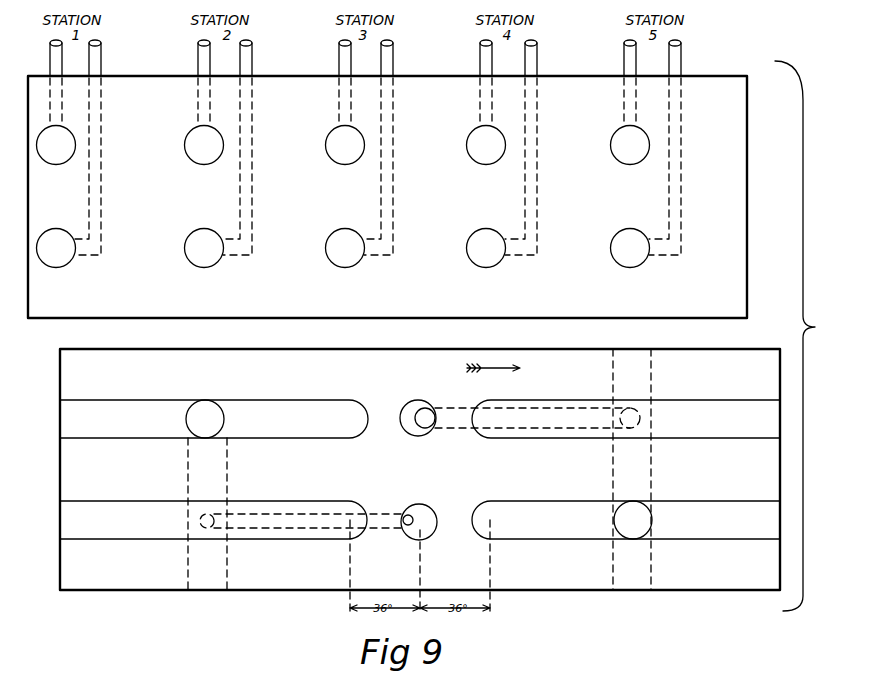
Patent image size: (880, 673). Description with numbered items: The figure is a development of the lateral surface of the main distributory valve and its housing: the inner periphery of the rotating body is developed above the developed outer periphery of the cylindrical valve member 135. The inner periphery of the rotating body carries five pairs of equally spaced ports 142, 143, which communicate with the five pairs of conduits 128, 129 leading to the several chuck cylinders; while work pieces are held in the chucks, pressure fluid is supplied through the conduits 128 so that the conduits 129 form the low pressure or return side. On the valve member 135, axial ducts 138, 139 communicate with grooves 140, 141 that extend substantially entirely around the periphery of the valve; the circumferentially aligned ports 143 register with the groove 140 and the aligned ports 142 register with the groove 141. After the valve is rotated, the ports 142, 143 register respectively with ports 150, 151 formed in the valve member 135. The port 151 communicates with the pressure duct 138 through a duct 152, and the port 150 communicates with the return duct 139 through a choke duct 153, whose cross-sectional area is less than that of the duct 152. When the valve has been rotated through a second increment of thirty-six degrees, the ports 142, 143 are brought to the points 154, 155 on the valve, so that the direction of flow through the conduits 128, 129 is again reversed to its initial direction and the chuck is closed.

The conduit 129 is at (326, 83).
The conduit 128 is at (397, 147).
The port 143 is at (343, 163).
The port 142 is at (343, 266).
The groove 141 is at (399, 419).
The cylindrical valve member 135 is at (401, 515).
The groove 140 is at (402, 469).
The duct 139 is at (189, 531).
The point 155 is at (347, 404).
The point 154 is at (301, 500).
The port 151 is at (412, 403).
The duct 152 is at (527, 439).
The port 150 is at (420, 539).
The choke duct 153 is at (386, 494).
The duct 138 is at (606, 537).